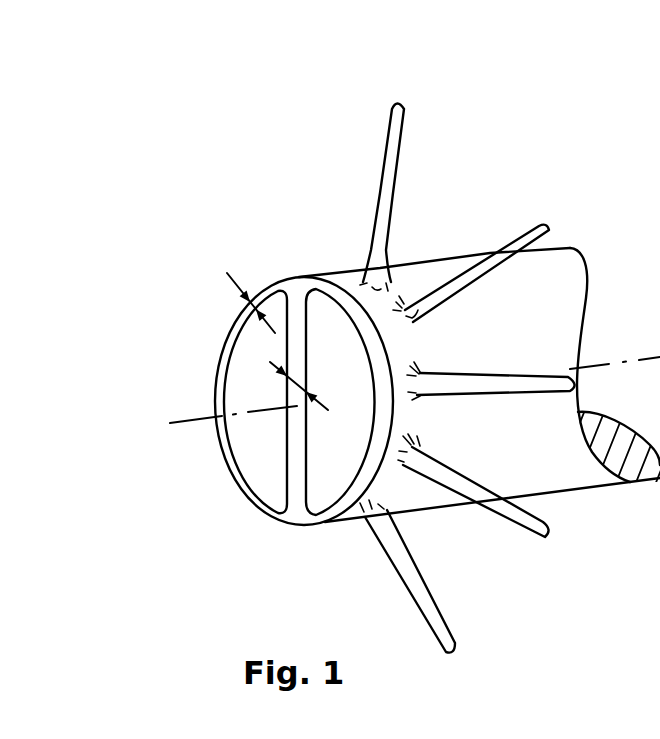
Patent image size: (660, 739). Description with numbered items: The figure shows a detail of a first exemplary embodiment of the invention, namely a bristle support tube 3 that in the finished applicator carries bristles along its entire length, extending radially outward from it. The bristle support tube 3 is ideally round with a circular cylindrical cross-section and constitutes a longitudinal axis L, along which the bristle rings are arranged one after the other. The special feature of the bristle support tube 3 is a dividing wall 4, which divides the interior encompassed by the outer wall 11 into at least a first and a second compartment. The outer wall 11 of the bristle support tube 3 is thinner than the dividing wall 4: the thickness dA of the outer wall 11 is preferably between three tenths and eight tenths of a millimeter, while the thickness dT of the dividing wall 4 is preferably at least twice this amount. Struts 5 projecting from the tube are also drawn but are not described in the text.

The bristle support tube 3 is at (542, 465).
The dividing wall 4 is at (297, 442).
The struts 5 is at (489, 262).
The outer wall 11 is at (230, 343).
The longitudinal axis L is at (190, 420).
The thickness of the outer wall dA is at (228, 273).
The thickness of the dividing wall dT is at (317, 386).